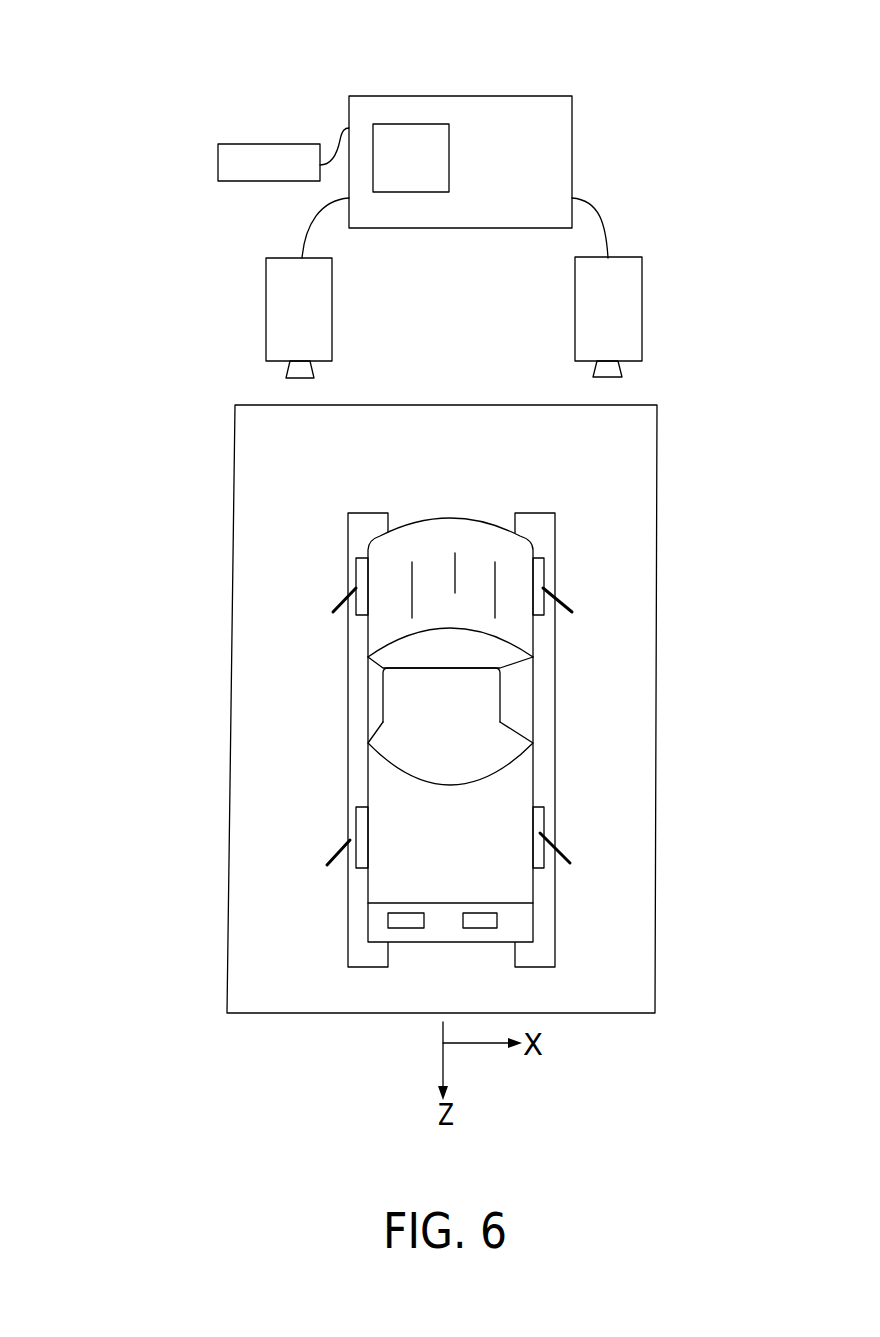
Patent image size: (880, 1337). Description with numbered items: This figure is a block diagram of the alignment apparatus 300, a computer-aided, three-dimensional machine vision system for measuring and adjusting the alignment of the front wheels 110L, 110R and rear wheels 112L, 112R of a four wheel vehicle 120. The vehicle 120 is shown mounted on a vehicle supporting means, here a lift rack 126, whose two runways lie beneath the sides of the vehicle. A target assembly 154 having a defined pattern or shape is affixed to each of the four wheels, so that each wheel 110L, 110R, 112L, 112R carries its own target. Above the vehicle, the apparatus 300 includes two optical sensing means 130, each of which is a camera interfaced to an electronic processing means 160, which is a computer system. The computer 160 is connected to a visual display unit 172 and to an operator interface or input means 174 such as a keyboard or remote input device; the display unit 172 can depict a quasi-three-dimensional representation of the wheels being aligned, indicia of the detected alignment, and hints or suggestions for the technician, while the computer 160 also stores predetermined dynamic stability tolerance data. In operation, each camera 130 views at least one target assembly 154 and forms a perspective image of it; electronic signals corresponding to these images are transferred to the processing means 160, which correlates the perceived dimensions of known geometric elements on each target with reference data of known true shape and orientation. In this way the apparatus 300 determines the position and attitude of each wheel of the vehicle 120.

The alignment apparatus 300 is at (132, 125).
The visual display unit 172 is at (405, 96).
The electronic processing means 160 is at (447, 124).
The operator interface or input means 174 is at (275, 153).
The optical sensing means 130 is at (332, 313).
The lift rack 126 is at (532, 967).
The four wheel vehicle 120 is at (366, 700).
The left front wheel 110L is at (353, 603).
The right front wheel 110R is at (546, 603).
The left rear wheel 112L is at (354, 858).
The right rear wheel 112R is at (546, 858).
The target assembly 154 is at (338, 602).